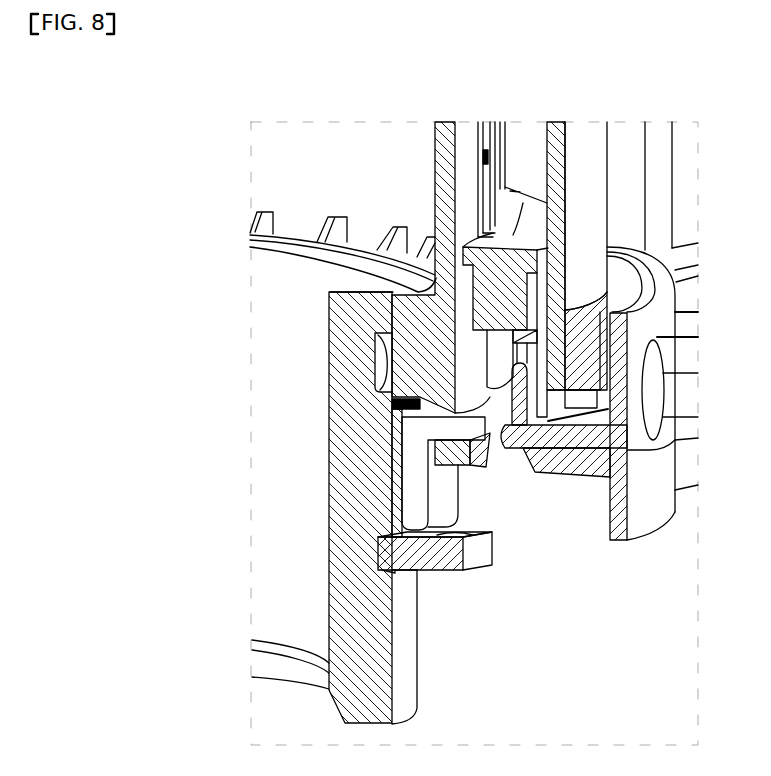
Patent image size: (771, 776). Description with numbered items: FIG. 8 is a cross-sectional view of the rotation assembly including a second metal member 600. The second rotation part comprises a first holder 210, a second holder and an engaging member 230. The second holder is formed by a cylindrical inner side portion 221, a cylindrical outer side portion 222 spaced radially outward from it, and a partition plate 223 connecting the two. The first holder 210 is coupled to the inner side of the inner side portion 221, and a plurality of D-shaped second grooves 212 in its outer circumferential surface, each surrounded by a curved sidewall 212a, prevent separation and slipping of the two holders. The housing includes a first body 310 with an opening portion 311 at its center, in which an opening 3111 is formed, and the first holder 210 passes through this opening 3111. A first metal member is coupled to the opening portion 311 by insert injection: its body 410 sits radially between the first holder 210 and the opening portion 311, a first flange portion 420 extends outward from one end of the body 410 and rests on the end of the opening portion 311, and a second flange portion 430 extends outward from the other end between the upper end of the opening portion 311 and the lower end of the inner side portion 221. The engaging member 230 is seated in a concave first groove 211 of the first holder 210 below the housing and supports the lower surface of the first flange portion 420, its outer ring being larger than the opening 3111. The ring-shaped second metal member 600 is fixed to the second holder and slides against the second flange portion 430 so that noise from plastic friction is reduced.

The first holder 210 is at (368, 695).
The first groove 211 is at (415, 538).
The second groove 212 is at (378, 361).
The sidewall 212a is at (380, 334).
The inner side portion 221 is at (441, 156).
The outer side portion 222 is at (557, 155).
The partition plate 223 is at (490, 124).
The engaging member 230 is at (478, 555).
The first body 310 is at (648, 560).
The opening portion 311 is at (440, 488).
The opening 3111 is at (395, 472).
The body 410 is at (440, 528).
The first flange portion 420 is at (415, 548).
The second flange portion 430 is at (395, 413).
The second metal member 600 is at (393, 404).